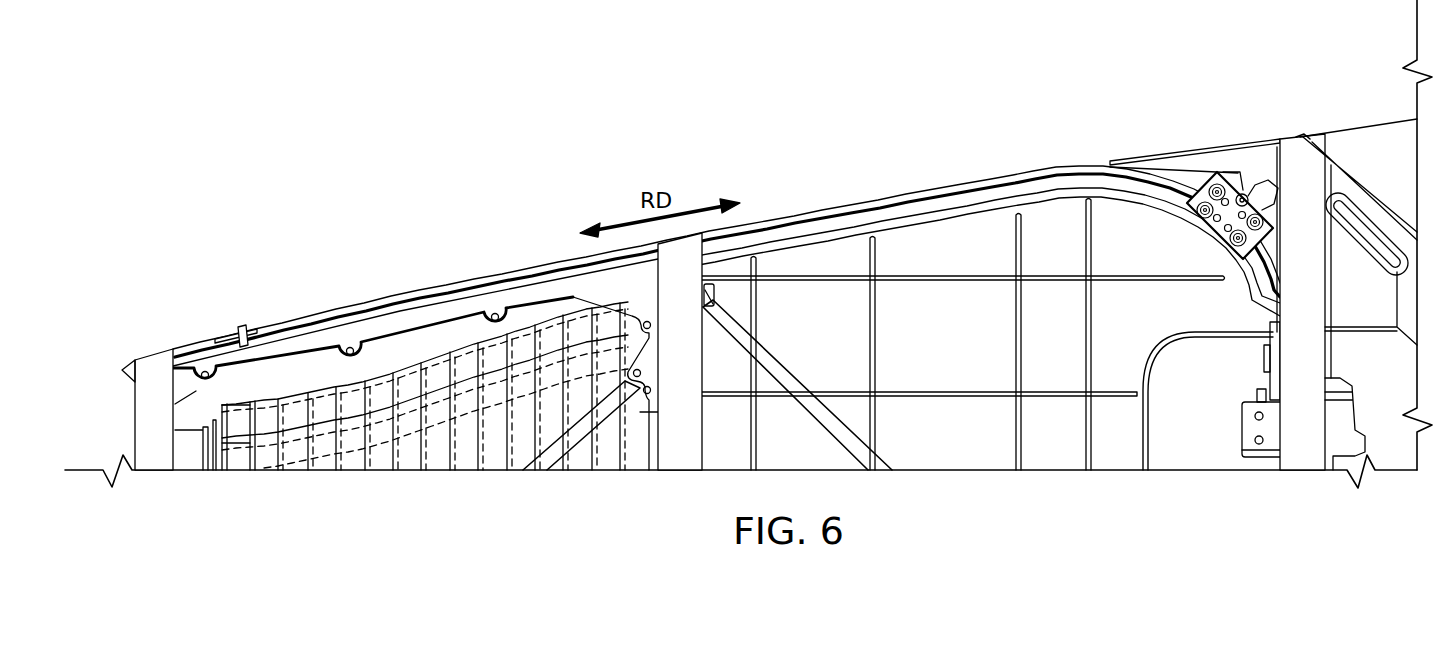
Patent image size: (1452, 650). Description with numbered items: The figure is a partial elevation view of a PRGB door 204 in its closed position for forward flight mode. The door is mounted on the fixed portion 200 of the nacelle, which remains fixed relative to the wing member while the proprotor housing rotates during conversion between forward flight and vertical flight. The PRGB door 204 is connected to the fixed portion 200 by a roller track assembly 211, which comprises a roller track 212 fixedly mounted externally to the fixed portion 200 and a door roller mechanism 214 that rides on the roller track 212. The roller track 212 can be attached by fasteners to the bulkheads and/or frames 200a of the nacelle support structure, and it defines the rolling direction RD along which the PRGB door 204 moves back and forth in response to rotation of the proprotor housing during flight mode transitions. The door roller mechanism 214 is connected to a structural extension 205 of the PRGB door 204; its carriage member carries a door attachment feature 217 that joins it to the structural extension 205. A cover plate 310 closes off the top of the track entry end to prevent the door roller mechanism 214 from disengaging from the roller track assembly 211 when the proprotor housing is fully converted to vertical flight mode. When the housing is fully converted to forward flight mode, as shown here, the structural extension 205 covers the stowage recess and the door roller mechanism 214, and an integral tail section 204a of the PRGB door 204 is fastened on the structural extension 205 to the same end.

The fixed portion 200 is at (147, 341).
The frames 200a is at (680, 463).
The cover plate 310 is at (226, 330).
The roller track assembly 211 is at (813, 208).
The roller track 212 is at (902, 212).
The structural extension 205 is at (1158, 157).
The door attachment feature 217 is at (1240, 193).
The integral tail section 204a is at (1302, 135).
The PRGB door 204 is at (1367, 133).
The door roller mechanism 214 is at (1222, 236).